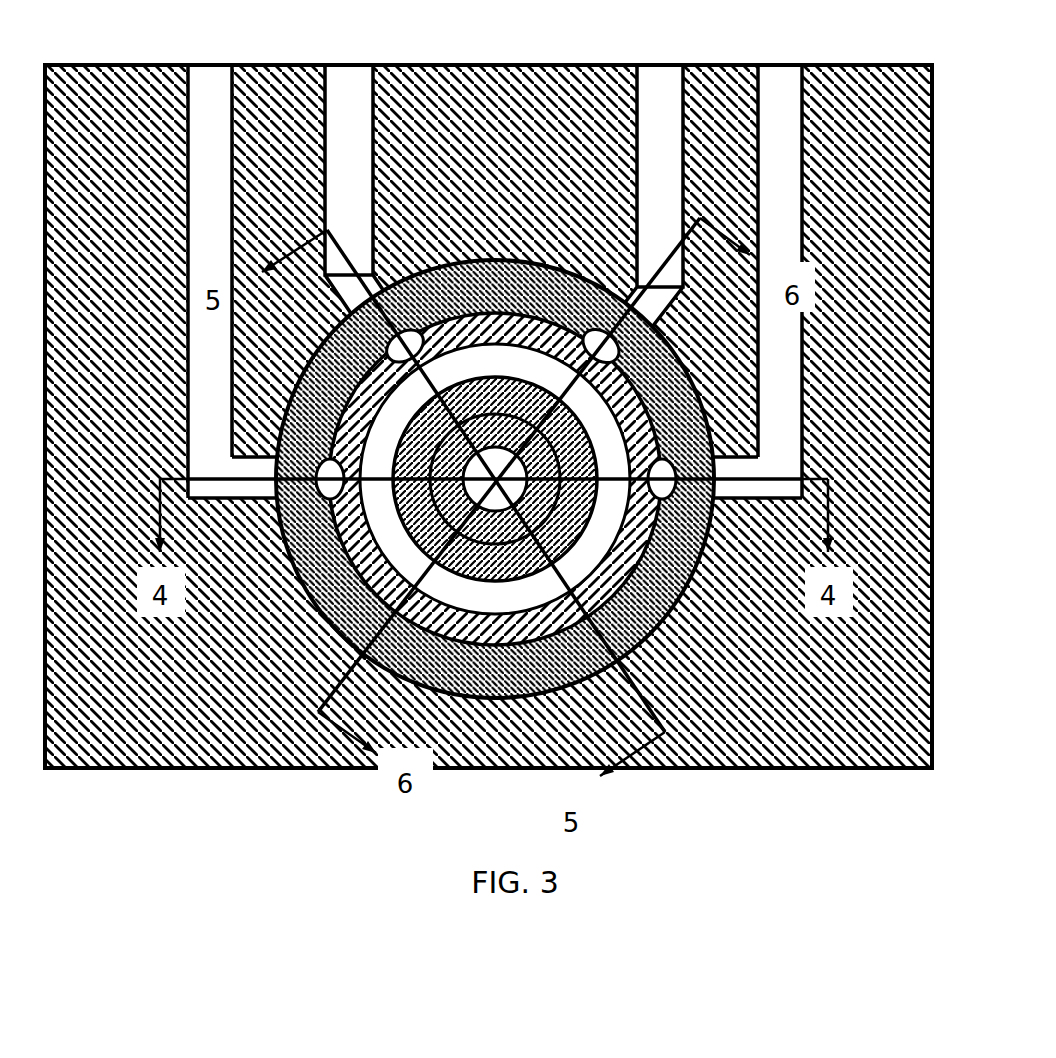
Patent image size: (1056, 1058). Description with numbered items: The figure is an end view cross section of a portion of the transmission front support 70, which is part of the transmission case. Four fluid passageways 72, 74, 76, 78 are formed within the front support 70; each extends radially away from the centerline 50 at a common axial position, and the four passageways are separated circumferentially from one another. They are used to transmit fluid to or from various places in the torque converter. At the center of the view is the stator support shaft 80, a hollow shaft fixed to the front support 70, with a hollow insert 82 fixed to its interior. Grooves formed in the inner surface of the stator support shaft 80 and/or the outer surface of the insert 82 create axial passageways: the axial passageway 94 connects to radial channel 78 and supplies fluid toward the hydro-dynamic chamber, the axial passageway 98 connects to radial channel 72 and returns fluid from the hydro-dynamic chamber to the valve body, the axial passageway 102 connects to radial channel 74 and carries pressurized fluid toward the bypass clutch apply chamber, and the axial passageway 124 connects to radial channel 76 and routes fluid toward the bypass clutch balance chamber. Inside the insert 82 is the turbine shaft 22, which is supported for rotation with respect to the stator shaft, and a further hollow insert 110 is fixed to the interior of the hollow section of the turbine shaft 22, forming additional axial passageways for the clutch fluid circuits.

The turbine shaft 22 is at (700, 640).
The centerline 50 is at (495, 433).
The transmission front support 70 is at (878, 217).
The fluid passageway 72 is at (205, 118).
The fluid passageway 74 is at (345, 119).
The fluid passageway 76 is at (665, 141).
The fluid passageway 78 is at (782, 438).
The stator support shaft 80 is at (690, 377).
The hollow insert 82 is at (660, 433).
The axial passageway 94 is at (600, 655).
The axial passageway 98 is at (335, 502).
The axial passageway 102 is at (370, 560).
The hollow insert 110 is at (680, 565).
The axial passageway 124 is at (540, 583).